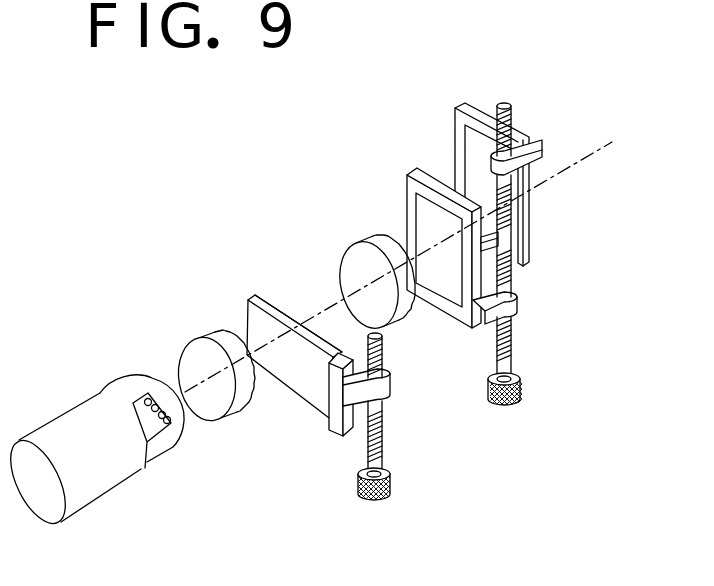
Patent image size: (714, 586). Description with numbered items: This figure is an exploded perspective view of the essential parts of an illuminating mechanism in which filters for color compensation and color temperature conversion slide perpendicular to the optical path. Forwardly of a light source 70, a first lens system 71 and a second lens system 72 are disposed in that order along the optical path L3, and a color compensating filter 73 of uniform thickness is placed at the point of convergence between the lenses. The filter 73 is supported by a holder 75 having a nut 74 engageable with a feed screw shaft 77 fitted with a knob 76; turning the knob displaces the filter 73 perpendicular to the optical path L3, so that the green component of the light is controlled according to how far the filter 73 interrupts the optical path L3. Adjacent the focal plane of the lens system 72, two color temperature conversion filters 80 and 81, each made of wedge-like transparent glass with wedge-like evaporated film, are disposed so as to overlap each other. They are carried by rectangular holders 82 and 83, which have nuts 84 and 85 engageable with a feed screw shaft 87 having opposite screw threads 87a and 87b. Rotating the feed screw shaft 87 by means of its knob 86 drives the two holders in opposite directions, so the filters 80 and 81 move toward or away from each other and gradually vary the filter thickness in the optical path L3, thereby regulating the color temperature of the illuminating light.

The light source 70 is at (143, 380).
The lens system 71 is at (198, 349).
The lens system 72 is at (355, 258).
The color compensating filter 73 is at (295, 387).
The nut 74 is at (390, 407).
The holder 75 is at (332, 433).
The knob 76 is at (363, 497).
The feed screw shaft 77 is at (381, 440).
The color temperature conversion filter 80 is at (406, 203).
The color temperature conversion filter 81 is at (478, 145).
The holder 82 is at (428, 220).
The holder 83 is at (453, 132).
The nut 84 is at (517, 305).
The nut 85 is at (542, 151).
The adjusting knob 86 is at (517, 398).
The feed screw shaft 87 is at (511, 263).
The screw thread 87a is at (510, 348).
The screw thread 87b is at (512, 116).
The optical path L3 is at (307, 323).